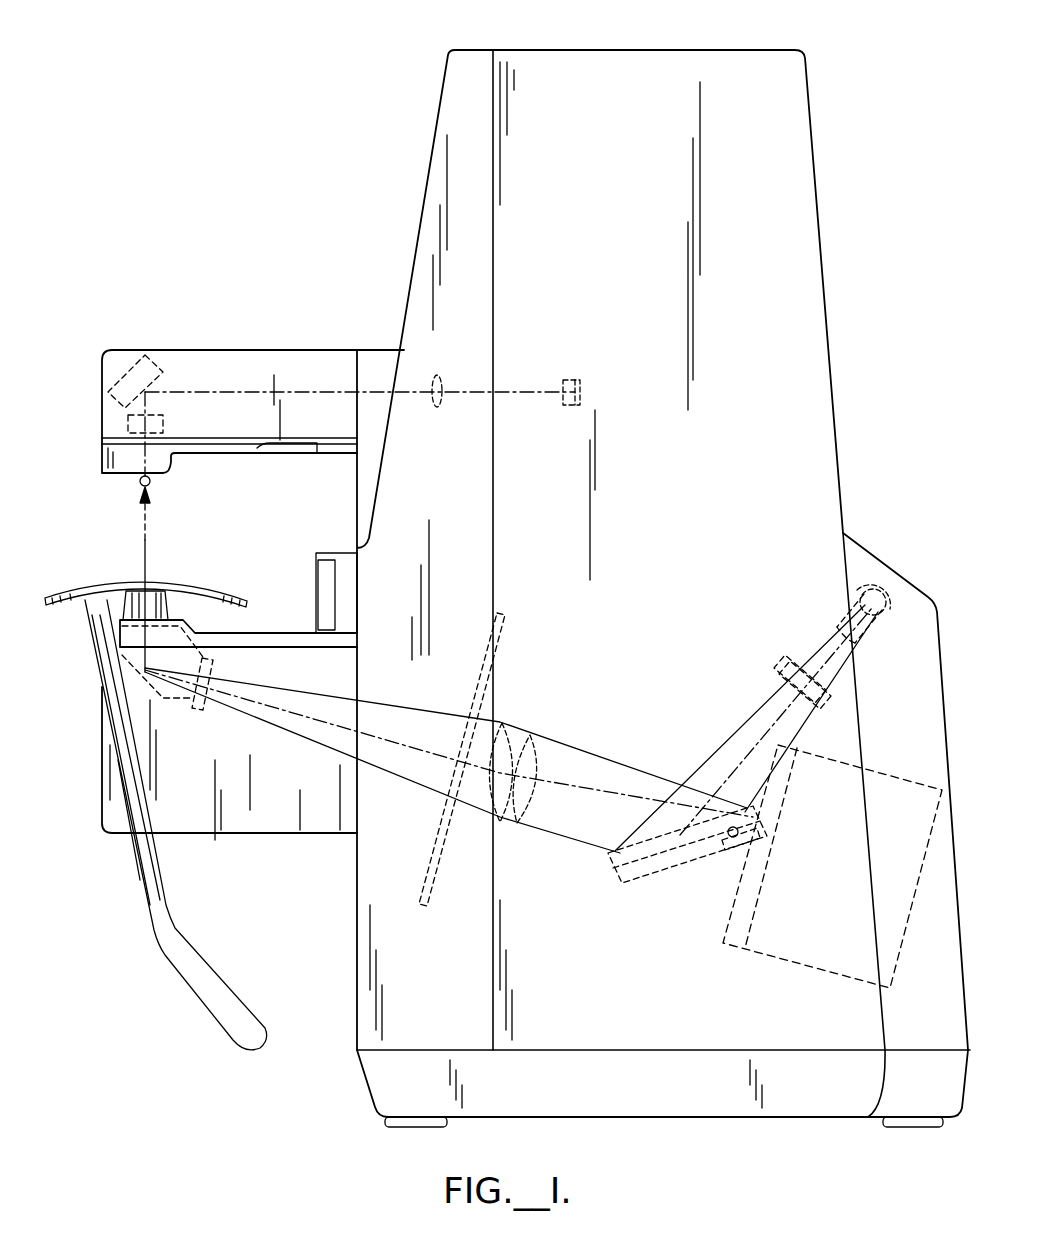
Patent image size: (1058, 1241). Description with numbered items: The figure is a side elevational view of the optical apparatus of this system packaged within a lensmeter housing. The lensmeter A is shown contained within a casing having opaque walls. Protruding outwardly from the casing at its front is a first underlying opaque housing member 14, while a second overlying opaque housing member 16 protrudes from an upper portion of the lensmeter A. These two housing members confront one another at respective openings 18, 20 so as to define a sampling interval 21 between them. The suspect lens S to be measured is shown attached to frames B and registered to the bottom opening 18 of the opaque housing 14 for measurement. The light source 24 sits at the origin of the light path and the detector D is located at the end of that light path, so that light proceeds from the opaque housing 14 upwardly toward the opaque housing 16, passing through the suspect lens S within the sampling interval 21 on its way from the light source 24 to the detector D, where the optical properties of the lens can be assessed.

The lensmeter A is at (753, 51).
The second overlying opaque housing member 16 is at (289, 350).
The detector D is at (583, 388).
The opening 20 is at (170, 462).
The sampling interval 21 is at (136, 520).
The suspect lens S is at (94, 588).
The bottom opening 18 is at (168, 604).
The first underlying opaque housing member 14 is at (243, 840).
The light source 24 is at (858, 584).
The frames B is at (152, 869).